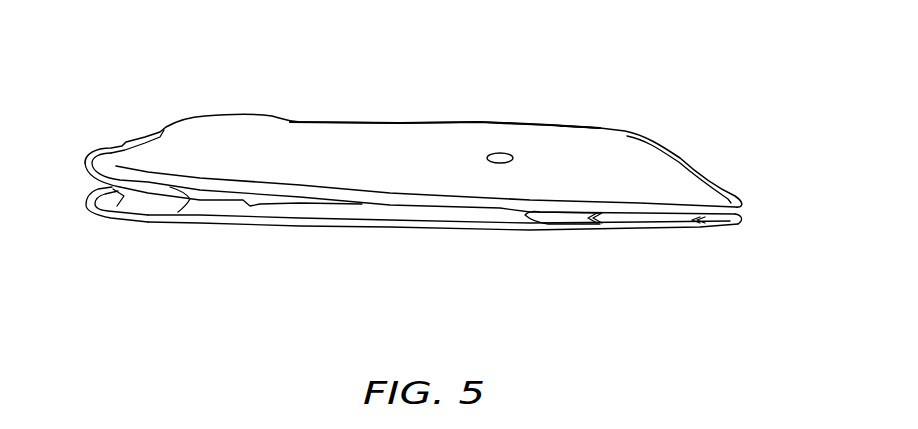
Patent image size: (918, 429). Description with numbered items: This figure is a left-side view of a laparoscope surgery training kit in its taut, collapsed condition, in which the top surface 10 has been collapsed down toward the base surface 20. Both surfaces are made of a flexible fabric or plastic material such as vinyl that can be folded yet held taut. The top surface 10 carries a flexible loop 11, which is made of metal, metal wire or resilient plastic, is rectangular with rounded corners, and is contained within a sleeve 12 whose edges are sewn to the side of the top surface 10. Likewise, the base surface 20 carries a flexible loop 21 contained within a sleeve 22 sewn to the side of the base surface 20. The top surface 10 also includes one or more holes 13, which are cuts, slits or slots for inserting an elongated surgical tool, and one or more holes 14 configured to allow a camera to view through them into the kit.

The top surface 10 is at (440, 135).
The flexible loop 11 is at (680, 157).
The sleeve 12 is at (712, 168).
The holes 13 is at (613, 188).
The holes 14 is at (496, 152).
The base surface 20 is at (450, 242).
The flexible loop 21 is at (742, 214).
The sleeve 22 is at (717, 229).